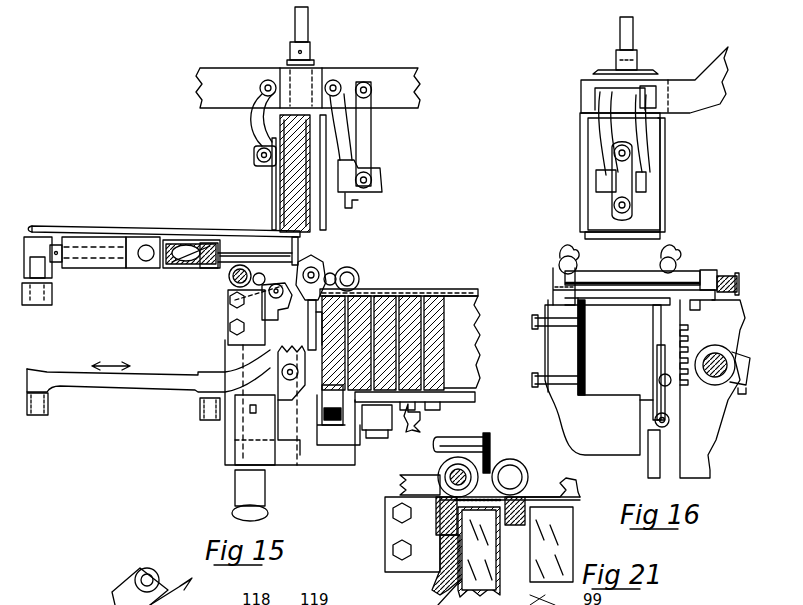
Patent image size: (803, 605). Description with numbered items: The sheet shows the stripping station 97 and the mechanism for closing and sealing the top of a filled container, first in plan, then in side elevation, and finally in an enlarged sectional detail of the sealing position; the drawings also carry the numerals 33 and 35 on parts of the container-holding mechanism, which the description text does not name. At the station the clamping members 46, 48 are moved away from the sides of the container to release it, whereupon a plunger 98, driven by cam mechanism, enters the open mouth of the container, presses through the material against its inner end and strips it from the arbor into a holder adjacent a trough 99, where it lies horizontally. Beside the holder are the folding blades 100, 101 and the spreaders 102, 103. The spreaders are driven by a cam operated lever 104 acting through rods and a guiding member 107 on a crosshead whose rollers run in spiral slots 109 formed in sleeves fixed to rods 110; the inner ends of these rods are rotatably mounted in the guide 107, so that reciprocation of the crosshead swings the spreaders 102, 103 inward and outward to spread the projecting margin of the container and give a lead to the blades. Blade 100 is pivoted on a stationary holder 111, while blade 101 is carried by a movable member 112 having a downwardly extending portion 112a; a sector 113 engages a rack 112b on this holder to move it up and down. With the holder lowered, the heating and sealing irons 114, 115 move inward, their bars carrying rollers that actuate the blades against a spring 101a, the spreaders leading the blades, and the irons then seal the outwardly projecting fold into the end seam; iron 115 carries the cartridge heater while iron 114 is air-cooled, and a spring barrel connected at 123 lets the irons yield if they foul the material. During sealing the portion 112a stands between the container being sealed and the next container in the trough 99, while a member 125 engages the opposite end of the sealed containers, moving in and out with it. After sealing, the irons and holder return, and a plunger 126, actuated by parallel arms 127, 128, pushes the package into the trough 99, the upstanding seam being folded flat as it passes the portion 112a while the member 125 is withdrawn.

In FIG. 15, the glass plate 33 is at (288, 170).
In FIG. 15, the lever 35 is at (280, 112).
In FIG. 16, the lever 35 is at (594, 120).
In FIG. 15, the clamping member 46 is at (272, 196).
In FIG. 15, the clamping member 48 is at (328, 222).
In FIG. 16, the clamping member 48 is at (648, 210).
In FIG. 15, the stripping station 97 is at (372, 246).
In FIG. 15, the plunger 98 is at (314, 56).
In FIG. 16, the plunger 98 is at (640, 70).
In FIG. 15, the trough 99 is at (460, 315).
In FIG. 15, the folding blade 100 is at (228, 310).
In FIG. 15, the folding blade 101 is at (336, 272).
In FIG. 16, the folding blade 101 is at (608, 272).
In FIG. 21, the folding blade 101 is at (500, 535).
In FIG. 16, the spring 101a is at (726, 268).
In FIG. 15, the spreader 102 is at (298, 258).
In FIG. 16, the spreader 102 is at (558, 258).
In FIG. 21, the spreader 102 is at (444, 487).
In FIG. 16, the spreader 103 is at (678, 256).
In FIG. 21, the spreader 103 is at (490, 462).
In FIG. 15, the cam operated lever 104 is at (44, 306).
In FIG. 15, the guiding member 107 is at (90, 262).
In FIG. 15, the spiral slot 109 is at (170, 270).
In FIG. 15, the rod 110 is at (236, 256).
In FIG. 21, the rod 110 is at (476, 446).
In FIG. 15, the stationary holder 111 is at (278, 300).
In FIG. 21, the stationary holder 111 is at (440, 520).
In FIG. 15, the movable member 112 is at (360, 272).
In FIG. 16, the movable member 112 is at (715, 305).
In FIG. 16, the downwardly extending portion 112a is at (640, 296).
In FIG. 21, the downwardly extending portion 112a is at (546, 504).
In FIG. 16, the rack 112b is at (676, 334).
In FIG. 16, the sector 113 is at (728, 346).
In FIG. 15, the heating and sealing iron 114 is at (368, 290).
In FIG. 21, the heating and sealing iron 114 is at (512, 466).
In FIG. 15, the heating and sealing iron 115 is at (228, 283).
In FIG. 21, the heating and sealing iron 115 is at (438, 472).
In FIG. 15, the connection 123 is at (144, 572).
In FIG. 15, the member 125 is at (305, 455).
In FIG. 15, the plunger 126 is at (312, 332).
In FIG. 15, the parallel arm 127 is at (38, 416).
In FIG. 15, the parallel arm 128 is at (212, 420).